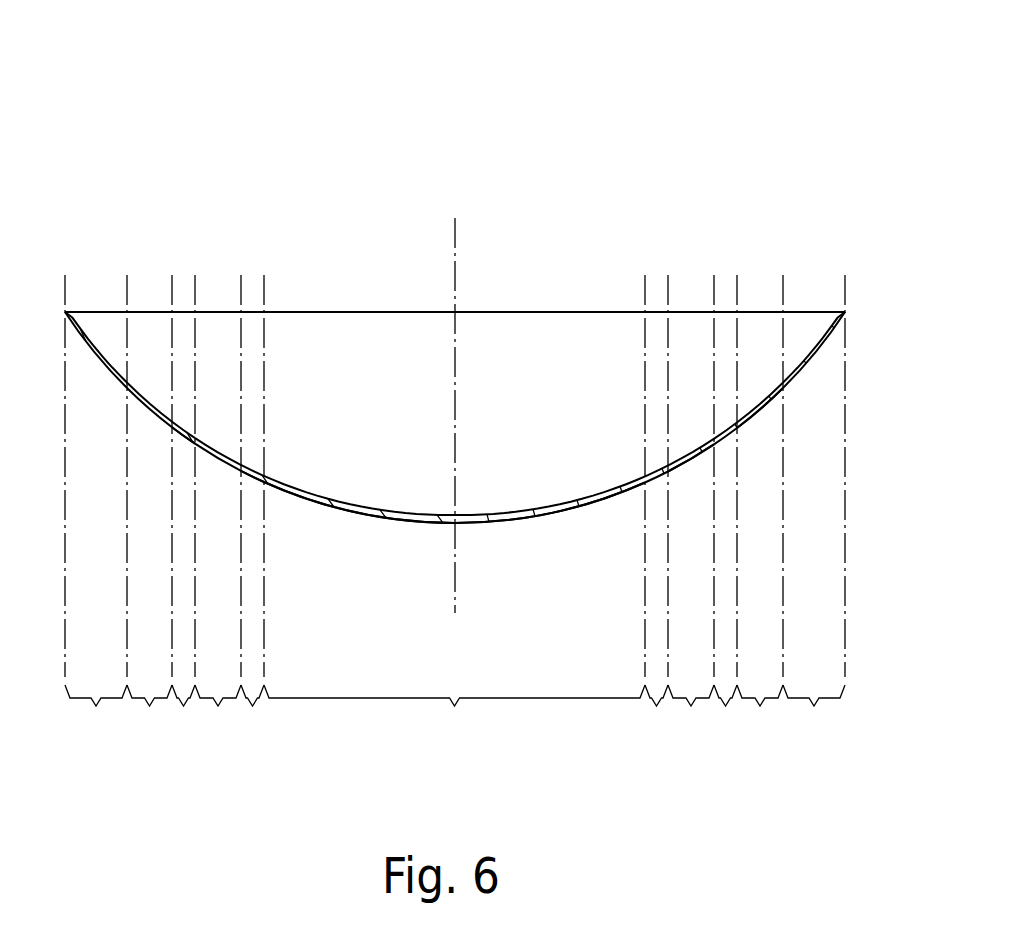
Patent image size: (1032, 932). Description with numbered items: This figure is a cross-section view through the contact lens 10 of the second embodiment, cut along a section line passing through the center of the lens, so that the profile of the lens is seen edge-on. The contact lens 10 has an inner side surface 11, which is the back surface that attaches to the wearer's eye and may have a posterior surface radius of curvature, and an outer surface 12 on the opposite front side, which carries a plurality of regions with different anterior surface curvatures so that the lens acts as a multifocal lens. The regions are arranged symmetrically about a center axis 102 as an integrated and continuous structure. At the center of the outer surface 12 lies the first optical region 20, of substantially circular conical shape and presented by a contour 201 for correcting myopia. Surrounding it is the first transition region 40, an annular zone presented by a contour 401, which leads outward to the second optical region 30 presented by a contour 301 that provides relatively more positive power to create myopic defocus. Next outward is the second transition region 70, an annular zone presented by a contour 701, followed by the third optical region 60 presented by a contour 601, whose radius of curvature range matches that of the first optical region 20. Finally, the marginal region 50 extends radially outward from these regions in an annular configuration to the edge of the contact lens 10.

The contact lens 10 is at (474, 379).
The inner side surface 11 is at (455, 360).
The outer surface 12 is at (474, 525).
The center axis 102 is at (457, 282).
The first optical region 20 is at (454, 610).
The second optical region 30 is at (454, 591).
The transition region 40 is at (455, 605).
The marginal region 50 is at (455, 525).
The third optical region 60 is at (455, 563).
The second transition region 70 is at (455, 583).
The contour 201 is at (517, 523).
The contour 301 is at (695, 462).
The contour 401 is at (253, 483).
The contour 601 is at (762, 415).
The contour 701 is at (184, 444).